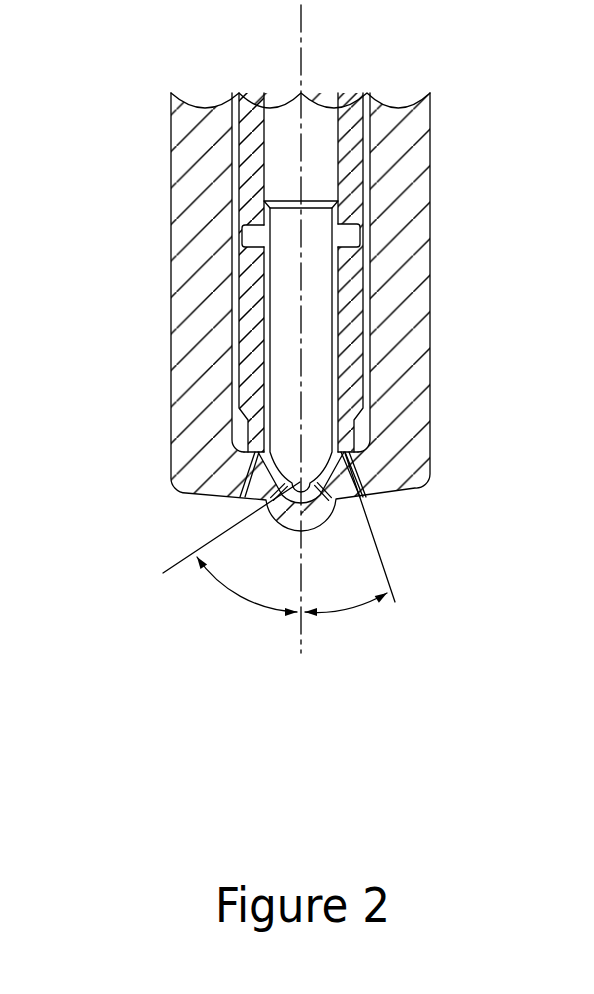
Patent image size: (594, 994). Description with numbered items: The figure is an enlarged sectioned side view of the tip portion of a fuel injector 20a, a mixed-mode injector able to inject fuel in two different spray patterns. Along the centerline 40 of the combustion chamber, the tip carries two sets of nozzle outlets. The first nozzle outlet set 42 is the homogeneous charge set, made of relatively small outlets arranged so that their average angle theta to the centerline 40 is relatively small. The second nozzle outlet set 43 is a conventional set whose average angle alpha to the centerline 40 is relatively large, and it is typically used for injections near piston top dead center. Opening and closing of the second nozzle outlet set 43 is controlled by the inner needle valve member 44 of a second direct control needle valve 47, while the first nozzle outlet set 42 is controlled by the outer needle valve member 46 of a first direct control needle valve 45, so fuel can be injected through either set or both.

The fuel injector tip portion 20a is at (432, 290).
The centerline 40 is at (300, 626).
The first nozzle outlet set 42 is at (245, 473).
The second nozzle outlet set 43 is at (333, 503).
The inner needle valve member 44 is at (337, 309).
The first direct control needle valve 45 is at (262, 320).
The outer needle valve member 46 is at (240, 403).
The second direct control needle valve 47 is at (230, 388).